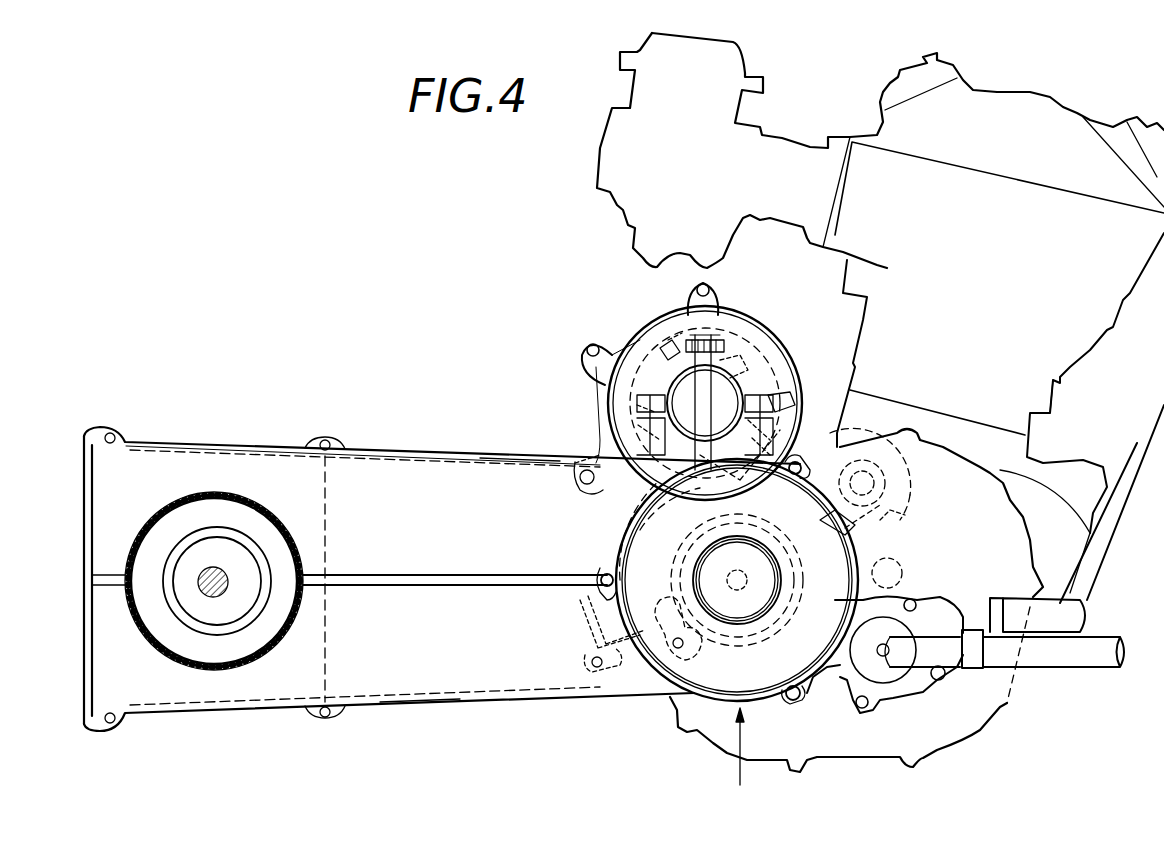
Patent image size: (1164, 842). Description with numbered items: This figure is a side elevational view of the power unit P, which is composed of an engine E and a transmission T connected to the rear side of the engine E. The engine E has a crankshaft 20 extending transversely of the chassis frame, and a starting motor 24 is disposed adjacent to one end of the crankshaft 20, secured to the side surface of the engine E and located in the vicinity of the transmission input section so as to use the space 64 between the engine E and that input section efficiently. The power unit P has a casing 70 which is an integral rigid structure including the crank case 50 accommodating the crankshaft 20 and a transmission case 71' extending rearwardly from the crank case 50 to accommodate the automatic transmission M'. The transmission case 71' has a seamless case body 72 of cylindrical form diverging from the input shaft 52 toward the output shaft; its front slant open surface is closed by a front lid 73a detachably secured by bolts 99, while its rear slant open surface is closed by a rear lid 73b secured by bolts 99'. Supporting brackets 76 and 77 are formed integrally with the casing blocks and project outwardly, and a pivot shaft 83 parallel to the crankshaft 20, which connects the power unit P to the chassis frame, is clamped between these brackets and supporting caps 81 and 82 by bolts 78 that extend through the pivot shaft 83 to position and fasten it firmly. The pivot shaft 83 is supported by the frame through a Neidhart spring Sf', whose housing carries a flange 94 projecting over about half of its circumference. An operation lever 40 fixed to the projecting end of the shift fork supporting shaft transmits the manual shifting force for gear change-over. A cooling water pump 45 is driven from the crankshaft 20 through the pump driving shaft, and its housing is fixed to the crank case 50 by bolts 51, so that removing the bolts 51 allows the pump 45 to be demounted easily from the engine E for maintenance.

The automatic transmission M' is at (442, 579).
The rear lid 73b is at (84, 545).
The casing 70 is at (418, 452).
The case body 72 is at (511, 470).
The transmission case 71' is at (420, 715).
The bolts 99' is at (230, 587).
The space 64 is at (222, 598).
The front lid 73a is at (760, 670).
The input shaft 52 is at (735, 585).
The bolts 99 is at (695, 603).
The supporting bracket 76 is at (600, 478).
The operation lever 40 is at (616, 616).
The Neidhart spring Sf' is at (695, 388).
The flange 94 is at (586, 345).
The bolts 78 is at (655, 365).
The pivot shaft 83 is at (746, 362).
The supporting bracket 77 is at (637, 422).
The supporting cap 81 is at (765, 402).
The supporting cap 82 is at (793, 400).
The power unit P is at (1062, 95).
The engine E is at (966, 557).
The starting motor 24 is at (905, 520).
The crankshaft 20 is at (902, 573).
The cooling water pump 45 is at (812, 672).
The bolts 51 is at (940, 681).
The crank case 50 is at (717, 738).
The transmission T is at (740, 746).